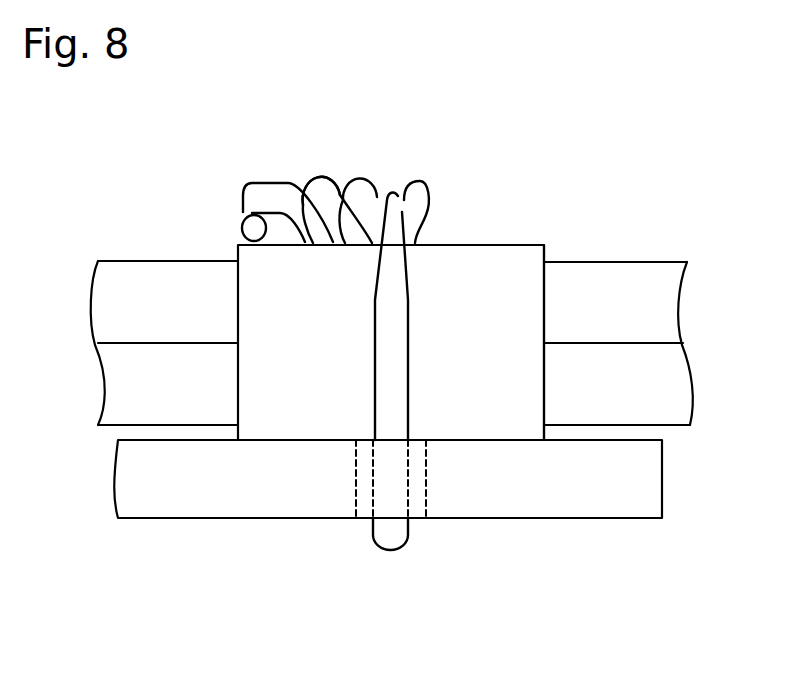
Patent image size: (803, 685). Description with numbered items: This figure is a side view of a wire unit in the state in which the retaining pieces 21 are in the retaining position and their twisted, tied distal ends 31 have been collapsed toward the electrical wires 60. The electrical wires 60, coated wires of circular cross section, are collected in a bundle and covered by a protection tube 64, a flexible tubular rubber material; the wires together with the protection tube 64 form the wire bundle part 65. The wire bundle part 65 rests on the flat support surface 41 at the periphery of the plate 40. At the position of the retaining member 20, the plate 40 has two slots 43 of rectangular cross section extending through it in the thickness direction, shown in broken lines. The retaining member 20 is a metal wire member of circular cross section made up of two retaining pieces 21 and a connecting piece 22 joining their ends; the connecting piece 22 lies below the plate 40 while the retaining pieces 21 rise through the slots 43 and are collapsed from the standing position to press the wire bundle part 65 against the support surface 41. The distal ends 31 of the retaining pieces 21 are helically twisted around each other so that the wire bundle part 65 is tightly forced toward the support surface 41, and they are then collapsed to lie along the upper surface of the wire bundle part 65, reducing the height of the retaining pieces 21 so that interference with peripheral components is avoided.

The retaining member 20 is at (256, 184).
The distal end 31 is at (313, 217).
The retaining piece 21 is at (398, 297).
The connecting piece 22 is at (389, 545).
The protection tube 64 is at (498, 252).
The wire bundle part 65 is at (546, 260).
The electrical wire 60 is at (647, 377).
The support surface 41 is at (517, 440).
The plate 40 is at (557, 518).
The slot 43 is at (425, 480).